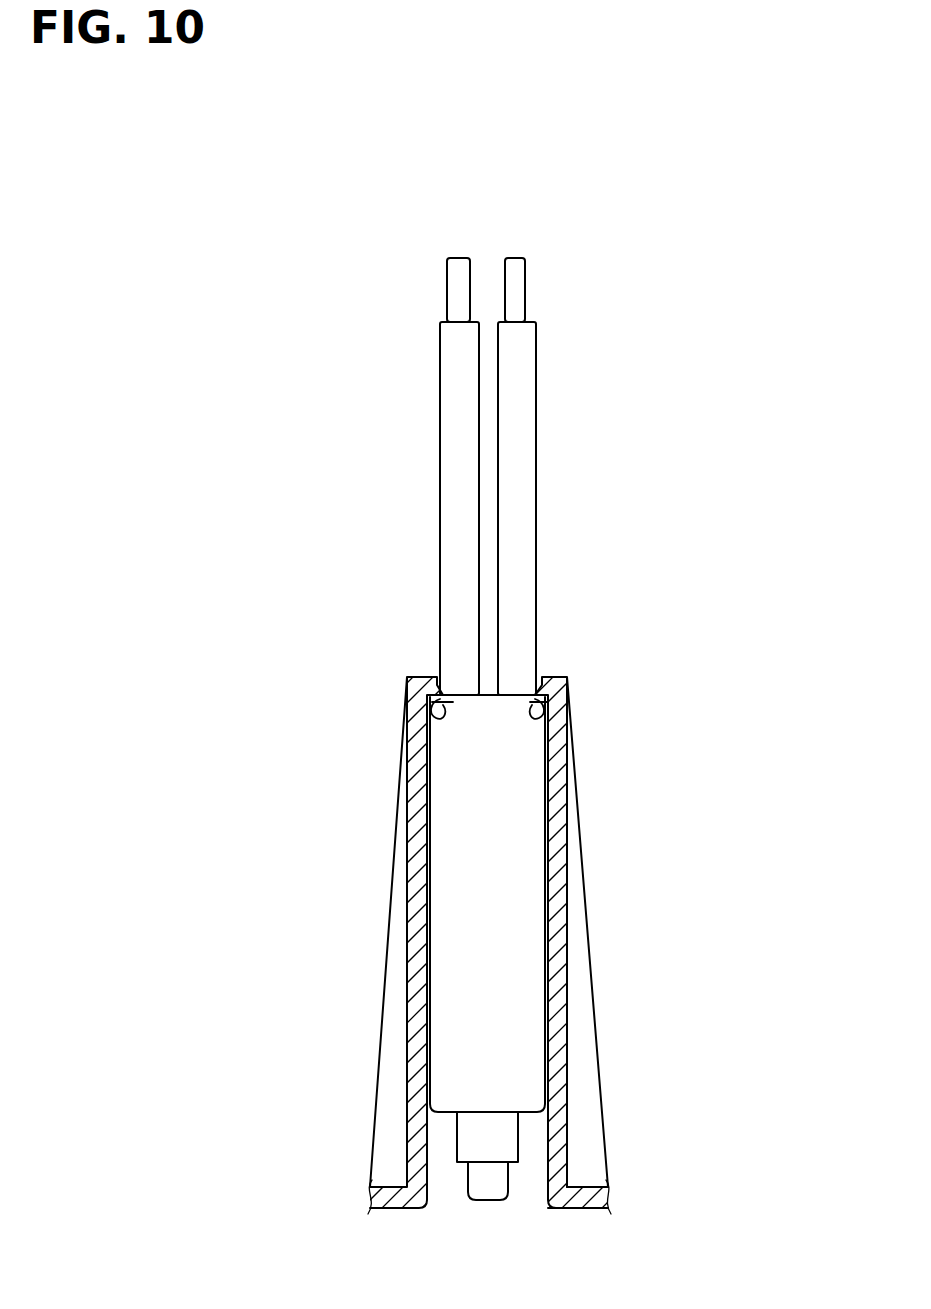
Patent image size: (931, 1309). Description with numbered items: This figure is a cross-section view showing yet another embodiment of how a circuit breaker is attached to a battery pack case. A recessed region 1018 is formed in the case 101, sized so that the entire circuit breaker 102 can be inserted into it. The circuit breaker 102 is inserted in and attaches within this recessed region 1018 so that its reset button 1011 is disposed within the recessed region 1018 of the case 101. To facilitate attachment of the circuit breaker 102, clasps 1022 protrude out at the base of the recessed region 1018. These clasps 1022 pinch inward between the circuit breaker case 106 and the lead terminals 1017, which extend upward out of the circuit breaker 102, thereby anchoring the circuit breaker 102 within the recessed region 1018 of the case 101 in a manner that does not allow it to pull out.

The lead terminals 1017 is at (450, 552).
The clasps 1022 is at (446, 708).
The recessed region 1018 is at (602, 859).
The case 106 is at (503, 939).
The reset button 1011 is at (494, 1192).
The circuit breaker 102 is at (455, 1203).
The case 101 is at (594, 1204).